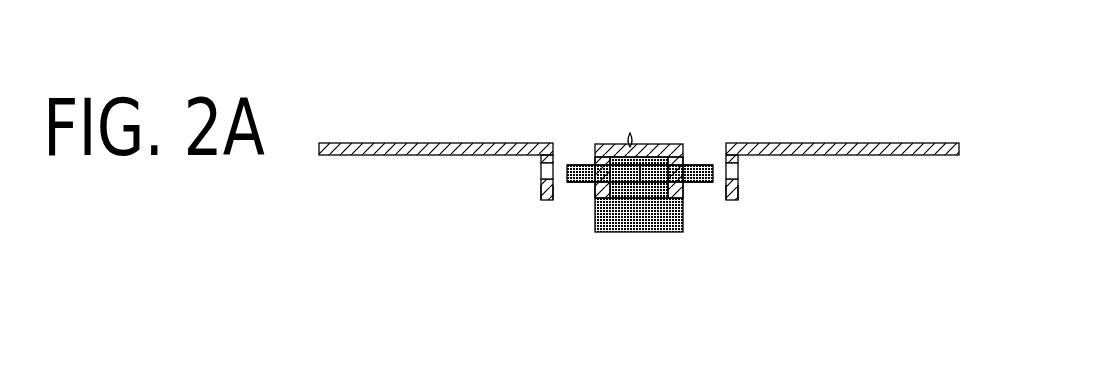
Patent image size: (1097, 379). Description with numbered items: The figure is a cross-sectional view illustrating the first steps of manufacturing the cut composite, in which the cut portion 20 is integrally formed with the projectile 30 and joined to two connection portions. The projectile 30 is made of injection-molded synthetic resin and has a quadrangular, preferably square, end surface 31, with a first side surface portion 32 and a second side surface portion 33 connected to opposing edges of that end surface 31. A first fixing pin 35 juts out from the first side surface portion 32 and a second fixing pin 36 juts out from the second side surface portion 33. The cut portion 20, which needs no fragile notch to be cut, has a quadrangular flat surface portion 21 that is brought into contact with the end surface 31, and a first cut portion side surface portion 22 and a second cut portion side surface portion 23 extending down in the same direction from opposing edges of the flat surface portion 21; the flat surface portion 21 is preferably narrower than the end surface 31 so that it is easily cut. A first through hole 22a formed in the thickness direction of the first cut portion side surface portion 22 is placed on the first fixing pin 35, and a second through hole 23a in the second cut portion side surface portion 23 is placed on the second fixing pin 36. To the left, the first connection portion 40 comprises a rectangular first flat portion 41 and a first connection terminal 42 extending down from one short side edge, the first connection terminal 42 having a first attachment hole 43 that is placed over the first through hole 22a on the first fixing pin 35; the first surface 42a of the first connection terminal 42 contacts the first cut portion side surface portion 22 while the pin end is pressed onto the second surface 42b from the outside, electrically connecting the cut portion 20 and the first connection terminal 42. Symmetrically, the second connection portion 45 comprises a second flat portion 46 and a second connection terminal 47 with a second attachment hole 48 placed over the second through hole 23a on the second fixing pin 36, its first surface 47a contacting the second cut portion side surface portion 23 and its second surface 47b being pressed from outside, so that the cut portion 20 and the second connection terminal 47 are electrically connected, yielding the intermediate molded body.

The cut portion 20 is at (588, 50).
The flat surface portion 21 is at (652, 143).
The first cut portion side surface portion 22 is at (593, 143).
The first through hole 22a is at (583, 158).
The second cut portion side surface portion 23 is at (688, 144).
The second through hole 23a is at (712, 155).
The projectile 30 is at (677, 250).
The end surface 31 is at (630, 145).
The first side surface portion 32 is at (596, 218).
The second side surface portion 33 is at (685, 218).
The first fixing pin 35 is at (575, 183).
The second fixing pin 36 is at (713, 183).
The first connection portion 40 is at (400, 72).
The first flat portion 41 is at (427, 143).
The first connection terminal 42 is at (561, 143).
The first surface 42a is at (556, 195).
The second surface 42b is at (541, 193).
The first attachment hole 43 is at (541, 172).
The second connection portion 45 is at (808, 78).
The second flat portion 46 is at (883, 143).
The second connection terminal 47 is at (722, 143).
The first surface 47a is at (718, 195).
The second surface 47b is at (739, 192).
The second attachment hole 48 is at (739, 176).